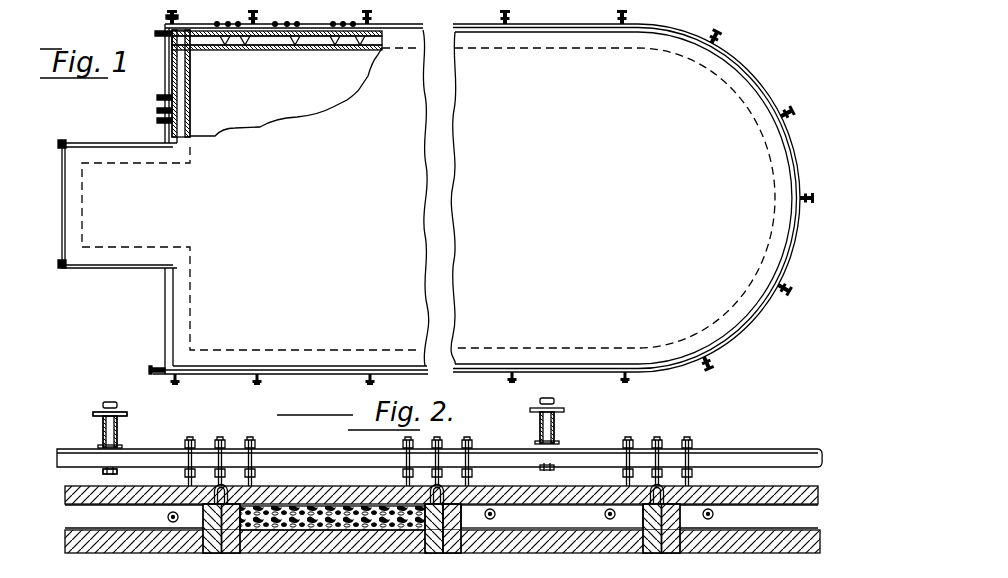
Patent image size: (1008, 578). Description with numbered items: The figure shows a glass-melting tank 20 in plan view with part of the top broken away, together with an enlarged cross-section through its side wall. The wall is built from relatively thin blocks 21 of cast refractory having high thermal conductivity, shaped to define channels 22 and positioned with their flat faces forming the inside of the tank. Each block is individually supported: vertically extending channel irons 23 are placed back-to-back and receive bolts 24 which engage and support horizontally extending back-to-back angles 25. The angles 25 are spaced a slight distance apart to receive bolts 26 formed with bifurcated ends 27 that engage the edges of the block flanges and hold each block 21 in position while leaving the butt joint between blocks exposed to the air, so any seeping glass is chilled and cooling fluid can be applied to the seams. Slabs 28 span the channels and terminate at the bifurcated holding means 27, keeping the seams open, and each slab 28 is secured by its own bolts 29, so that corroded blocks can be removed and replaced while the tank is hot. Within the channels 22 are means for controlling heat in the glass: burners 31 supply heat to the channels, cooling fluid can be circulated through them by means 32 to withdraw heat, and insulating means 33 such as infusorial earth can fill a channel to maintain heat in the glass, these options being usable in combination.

In FIG. 1, the glass-melting tank 20 is at (737, 89).
In FIG. 1, the blocks 21 is at (272, 50).
In FIG. 2, the blocks 21 is at (248, 548).
In FIG. 1, the channels 22 is at (258, 45).
In FIG. 2, the channels 22 is at (723, 520).
In FIG. 1, the channel irons 23 is at (168, 22).
In FIG. 2, the channel irons 23 is at (101, 428).
In FIG. 1, the bolts 24 is at (172, 12).
In FIG. 2, the bolts 24 is at (113, 403).
In FIG. 1, the angles 25 is at (403, 30).
In FIG. 2, the angles 25 is at (289, 452).
In FIG. 2, the bolts 26 is at (220, 438).
In FIG. 2, the bifurcated ends 27 is at (214, 486).
In FIG. 1, the slabs 28 is at (255, 36).
In FIG. 2, the slabs 28 is at (314, 498).
In FIG. 2, the bolts 29 is at (190, 438).
In FIG. 2, the burners 31 is at (604, 514).
In FIG. 2, the means 32 is at (167, 517).
In FIG. 2, the insulating means 33 is at (387, 498).